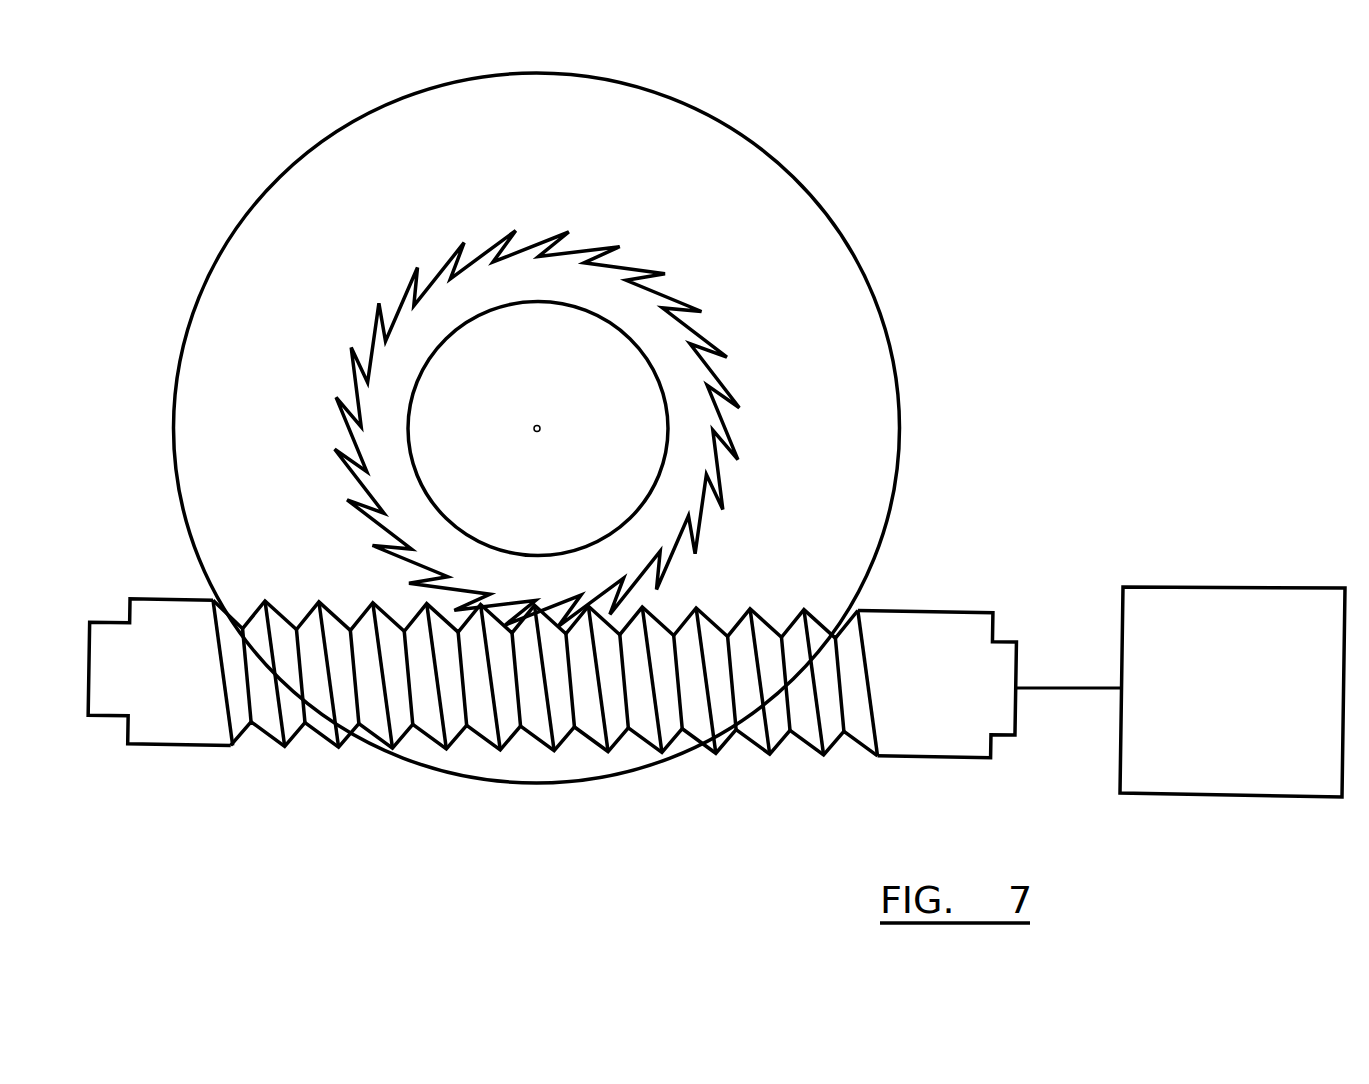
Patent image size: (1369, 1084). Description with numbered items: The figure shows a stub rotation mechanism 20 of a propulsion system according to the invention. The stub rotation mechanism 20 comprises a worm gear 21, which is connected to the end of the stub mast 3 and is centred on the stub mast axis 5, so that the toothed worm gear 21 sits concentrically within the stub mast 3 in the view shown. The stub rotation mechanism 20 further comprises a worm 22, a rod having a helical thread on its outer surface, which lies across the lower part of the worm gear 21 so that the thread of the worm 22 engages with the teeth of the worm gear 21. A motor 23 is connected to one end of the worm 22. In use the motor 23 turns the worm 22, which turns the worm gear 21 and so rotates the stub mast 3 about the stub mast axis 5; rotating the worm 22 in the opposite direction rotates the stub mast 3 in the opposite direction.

The stub mast 3 is at (263, 197).
The stub mast axis 5 is at (732, 262).
The worm gear 21 is at (687, 429).
The stub rotation mechanism 20 is at (535, 685).
The worm 22 is at (143, 613).
The motor 23 is at (1256, 709).